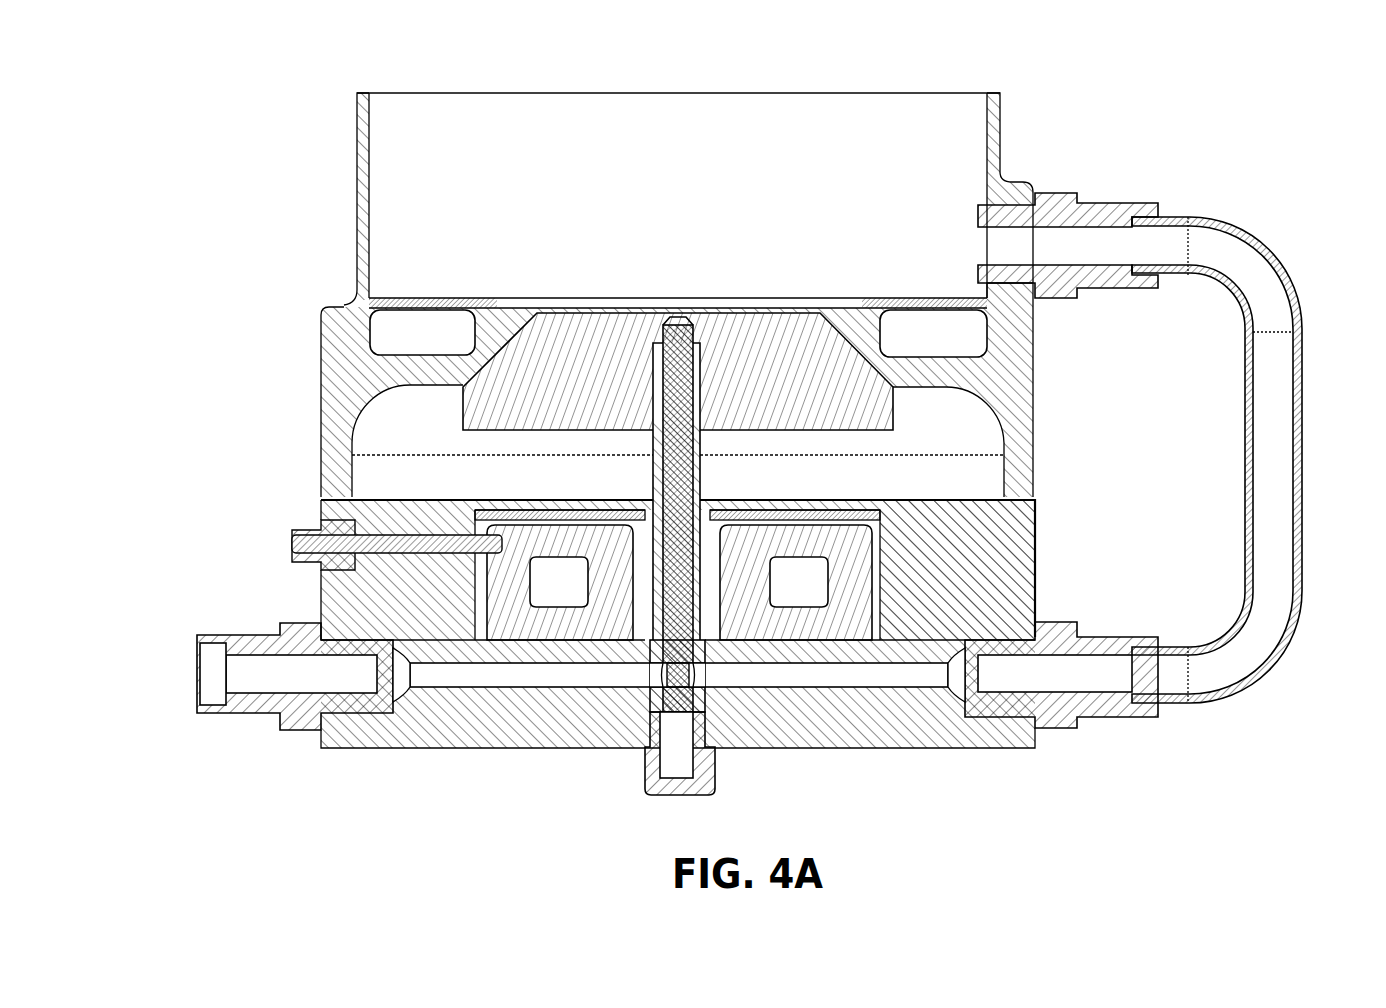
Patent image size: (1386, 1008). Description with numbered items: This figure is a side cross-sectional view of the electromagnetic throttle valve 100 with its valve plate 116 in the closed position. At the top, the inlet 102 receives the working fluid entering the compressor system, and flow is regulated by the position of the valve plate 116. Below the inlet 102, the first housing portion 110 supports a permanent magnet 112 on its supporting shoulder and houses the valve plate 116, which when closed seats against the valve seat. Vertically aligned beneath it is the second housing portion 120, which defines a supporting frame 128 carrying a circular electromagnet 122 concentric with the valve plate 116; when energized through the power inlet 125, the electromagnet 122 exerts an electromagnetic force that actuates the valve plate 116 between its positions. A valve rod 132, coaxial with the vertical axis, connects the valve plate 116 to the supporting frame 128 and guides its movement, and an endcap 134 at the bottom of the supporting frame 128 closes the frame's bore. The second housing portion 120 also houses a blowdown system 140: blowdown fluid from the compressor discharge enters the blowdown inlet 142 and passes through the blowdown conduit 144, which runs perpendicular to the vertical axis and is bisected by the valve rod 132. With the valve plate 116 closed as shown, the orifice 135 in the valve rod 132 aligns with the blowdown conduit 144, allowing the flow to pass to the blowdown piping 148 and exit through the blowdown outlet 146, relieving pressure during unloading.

The electromagnetic throttle valve 100 is at (1100, 104).
The inlet 102 is at (818, 81).
The first housing portion 110 is at (322, 412).
The permanent magnet 112 is at (405, 318).
The valve plate 116 is at (600, 330).
The second housing portion 120 is at (322, 583).
The electromagnet 122 is at (855, 555).
The power inlet 125 is at (300, 548).
The supporting frame 128 is at (972, 568).
The valve rod 132 is at (667, 640).
The endcap 134 is at (650, 760).
The orifice 135 is at (697, 677).
The blowdown system 140 is at (889, 672).
The blowdown inlet 142 is at (186, 668).
The blowdown conduit 144 is at (500, 680).
The blowdown outlet 146 is at (960, 245).
The blowdown piping 148 is at (1270, 434).